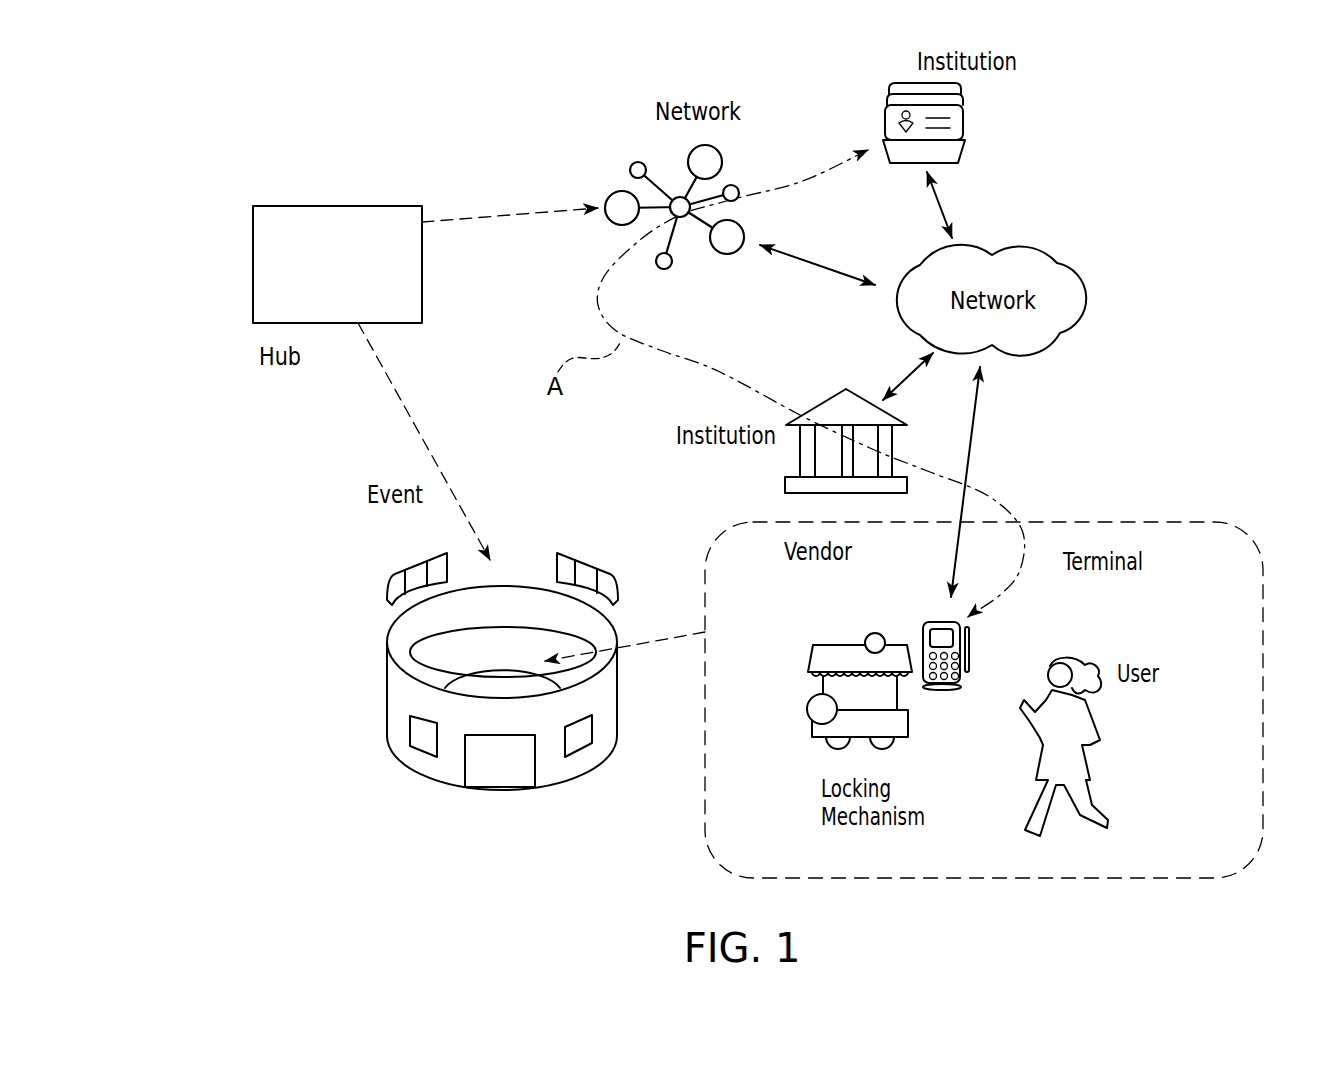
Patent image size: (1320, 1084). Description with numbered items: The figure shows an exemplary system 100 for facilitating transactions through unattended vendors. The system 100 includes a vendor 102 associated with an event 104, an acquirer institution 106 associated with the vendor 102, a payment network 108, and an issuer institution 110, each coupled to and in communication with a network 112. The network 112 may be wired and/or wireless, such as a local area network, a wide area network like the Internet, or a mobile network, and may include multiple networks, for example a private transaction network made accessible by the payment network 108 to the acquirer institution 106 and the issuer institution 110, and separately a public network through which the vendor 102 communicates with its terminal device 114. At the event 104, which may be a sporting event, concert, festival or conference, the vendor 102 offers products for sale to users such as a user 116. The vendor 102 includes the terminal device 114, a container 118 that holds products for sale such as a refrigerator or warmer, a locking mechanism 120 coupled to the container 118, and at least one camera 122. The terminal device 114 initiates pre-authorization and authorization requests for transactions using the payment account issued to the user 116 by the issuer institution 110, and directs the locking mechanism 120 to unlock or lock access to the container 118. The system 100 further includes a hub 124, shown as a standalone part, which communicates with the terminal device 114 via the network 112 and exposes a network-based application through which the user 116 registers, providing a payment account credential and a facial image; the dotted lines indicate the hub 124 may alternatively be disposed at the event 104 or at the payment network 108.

The system 100 is at (1162, 116).
The vendor 102 is at (830, 635).
The event 104 is at (348, 606).
The acquirer institution 106 is at (808, 383).
The payment network 108 is at (608, 177).
The issuer institution 110 is at (978, 140).
The network 112 is at (1075, 262).
The terminal device 114 is at (992, 634).
The user 116 is at (1102, 720).
The container 118 is at (912, 696).
The locking mechanism 120 is at (806, 712).
The camera 122 is at (885, 627).
The hub 124 is at (237, 224).